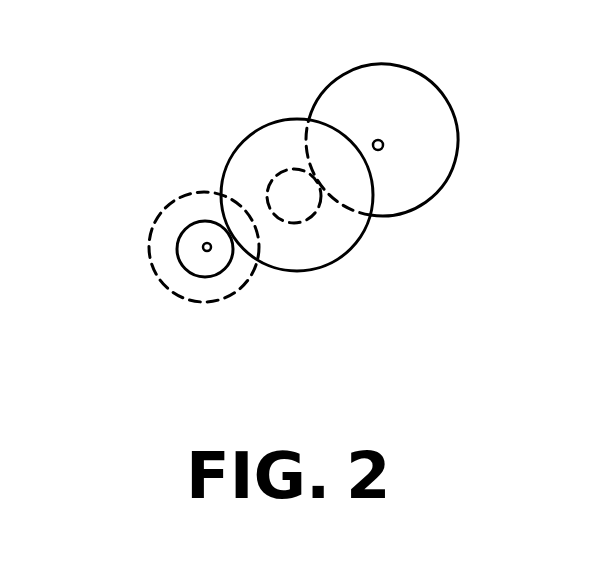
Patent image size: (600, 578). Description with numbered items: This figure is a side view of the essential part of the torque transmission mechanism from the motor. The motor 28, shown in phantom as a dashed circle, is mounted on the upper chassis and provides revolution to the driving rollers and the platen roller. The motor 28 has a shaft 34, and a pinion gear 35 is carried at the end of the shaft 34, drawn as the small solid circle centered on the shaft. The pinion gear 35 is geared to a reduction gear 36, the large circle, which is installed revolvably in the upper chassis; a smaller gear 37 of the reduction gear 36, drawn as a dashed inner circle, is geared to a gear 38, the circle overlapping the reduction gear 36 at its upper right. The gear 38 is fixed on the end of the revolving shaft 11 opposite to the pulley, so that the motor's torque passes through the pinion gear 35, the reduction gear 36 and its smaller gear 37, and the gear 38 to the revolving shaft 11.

The revolving shaft 11 is at (382, 148).
The motor 28 is at (152, 268).
The shaft 34 is at (205, 243).
The pinion gear 35 is at (199, 267).
The reduction gear 36 is at (273, 118).
The smaller gear 37 is at (302, 224).
The gear 38 is at (422, 72).